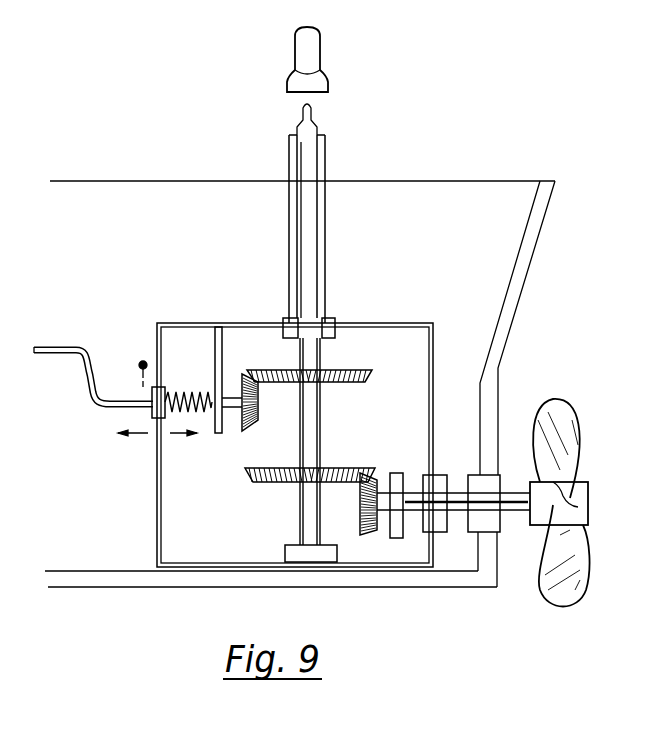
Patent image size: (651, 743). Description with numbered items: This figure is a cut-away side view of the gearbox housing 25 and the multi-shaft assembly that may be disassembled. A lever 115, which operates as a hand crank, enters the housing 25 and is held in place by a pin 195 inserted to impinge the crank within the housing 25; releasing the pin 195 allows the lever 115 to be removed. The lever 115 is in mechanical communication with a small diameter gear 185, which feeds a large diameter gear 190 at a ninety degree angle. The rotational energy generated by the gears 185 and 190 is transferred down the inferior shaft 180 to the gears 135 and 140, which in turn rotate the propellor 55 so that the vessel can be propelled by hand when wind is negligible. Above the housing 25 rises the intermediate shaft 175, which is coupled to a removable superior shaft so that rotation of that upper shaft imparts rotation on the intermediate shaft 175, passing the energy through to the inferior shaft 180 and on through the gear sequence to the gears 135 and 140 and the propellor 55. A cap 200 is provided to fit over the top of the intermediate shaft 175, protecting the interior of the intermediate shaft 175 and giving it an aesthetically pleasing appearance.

The housing 25 is at (413, 323).
The propellor 55 is at (577, 607).
The lever 115 is at (78, 347).
The gear 135 is at (268, 483).
The gear 140 is at (368, 531).
The intermediate shaft 175 is at (327, 192).
The inferior shaft 180 is at (322, 432).
The small diameter gear 185 is at (246, 431).
The large diameter gear 190 is at (357, 369).
The pin 195 is at (143, 360).
The cap 200 is at (307, 27).